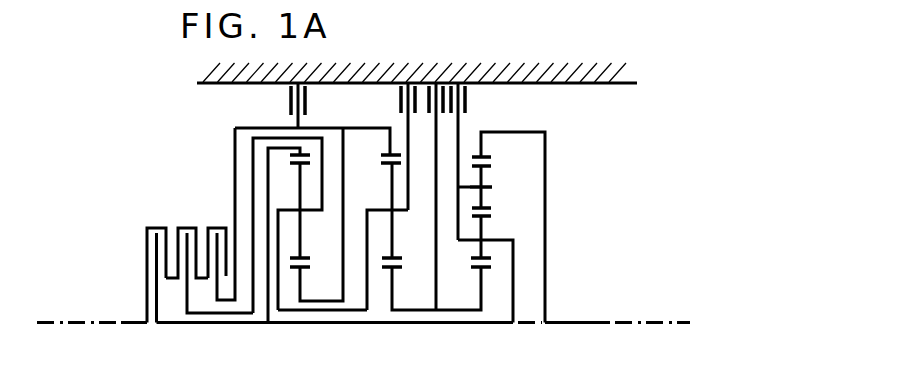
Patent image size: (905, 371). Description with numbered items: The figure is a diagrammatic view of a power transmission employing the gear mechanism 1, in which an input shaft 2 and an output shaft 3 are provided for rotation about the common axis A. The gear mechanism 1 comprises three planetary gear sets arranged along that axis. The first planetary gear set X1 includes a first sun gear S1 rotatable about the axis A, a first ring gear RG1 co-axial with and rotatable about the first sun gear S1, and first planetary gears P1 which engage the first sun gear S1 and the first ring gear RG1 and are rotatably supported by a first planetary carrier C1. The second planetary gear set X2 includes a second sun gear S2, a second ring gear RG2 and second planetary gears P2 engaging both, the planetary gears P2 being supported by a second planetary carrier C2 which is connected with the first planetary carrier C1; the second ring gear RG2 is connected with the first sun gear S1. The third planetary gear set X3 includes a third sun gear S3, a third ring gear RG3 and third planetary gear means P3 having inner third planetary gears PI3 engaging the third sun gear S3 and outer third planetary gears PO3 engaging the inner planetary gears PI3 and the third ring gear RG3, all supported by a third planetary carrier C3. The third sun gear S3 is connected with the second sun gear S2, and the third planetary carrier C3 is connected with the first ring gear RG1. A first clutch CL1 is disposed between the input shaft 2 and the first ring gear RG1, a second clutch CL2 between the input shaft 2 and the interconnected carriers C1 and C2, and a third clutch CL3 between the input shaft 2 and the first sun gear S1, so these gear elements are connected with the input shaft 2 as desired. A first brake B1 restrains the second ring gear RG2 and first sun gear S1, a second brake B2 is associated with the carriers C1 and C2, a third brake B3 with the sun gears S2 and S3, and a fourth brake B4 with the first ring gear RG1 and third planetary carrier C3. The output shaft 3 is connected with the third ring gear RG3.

The common axis A is at (70, 325).
The input shaft 2 is at (142, 327).
The gear mechanism 1 is at (259, 335).
The output shaft 3 is at (592, 326).
The first clutch CL1 is at (148, 228).
The second clutch CL2 is at (182, 226).
The third clutch CL3 is at (222, 208).
The first brake B1 is at (289, 97).
The second brake B2 is at (398, 100).
The third brake B3 is at (425, 100).
The fourth brake B4 is at (468, 100).
The first ring gear RG1 is at (303, 147).
The second ring gear RG2 is at (388, 143).
The third ring gear RG3 is at (483, 143).
The first planetary carrier C1 is at (322, 212).
The second planetary carrier C2 is at (395, 214).
The third planetary carrier C3 is at (515, 262).
The first planetary gears P1 is at (303, 256).
The second planetary gears P2 is at (397, 256).
The third planetary gear means P3 is at (495, 206).
The outer third planetary gears PO3 is at (488, 163).
The inner third planetary gears PI3 is at (489, 231).
The first sun gear S1 is at (302, 288).
The second sun gear S2 is at (394, 285).
The third sun gear S3 is at (477, 297).
The first planetary gear set X1 is at (290, 294).
The second planetary gear set X2 is at (383, 292).
The third planetary gear set X3 is at (473, 300).